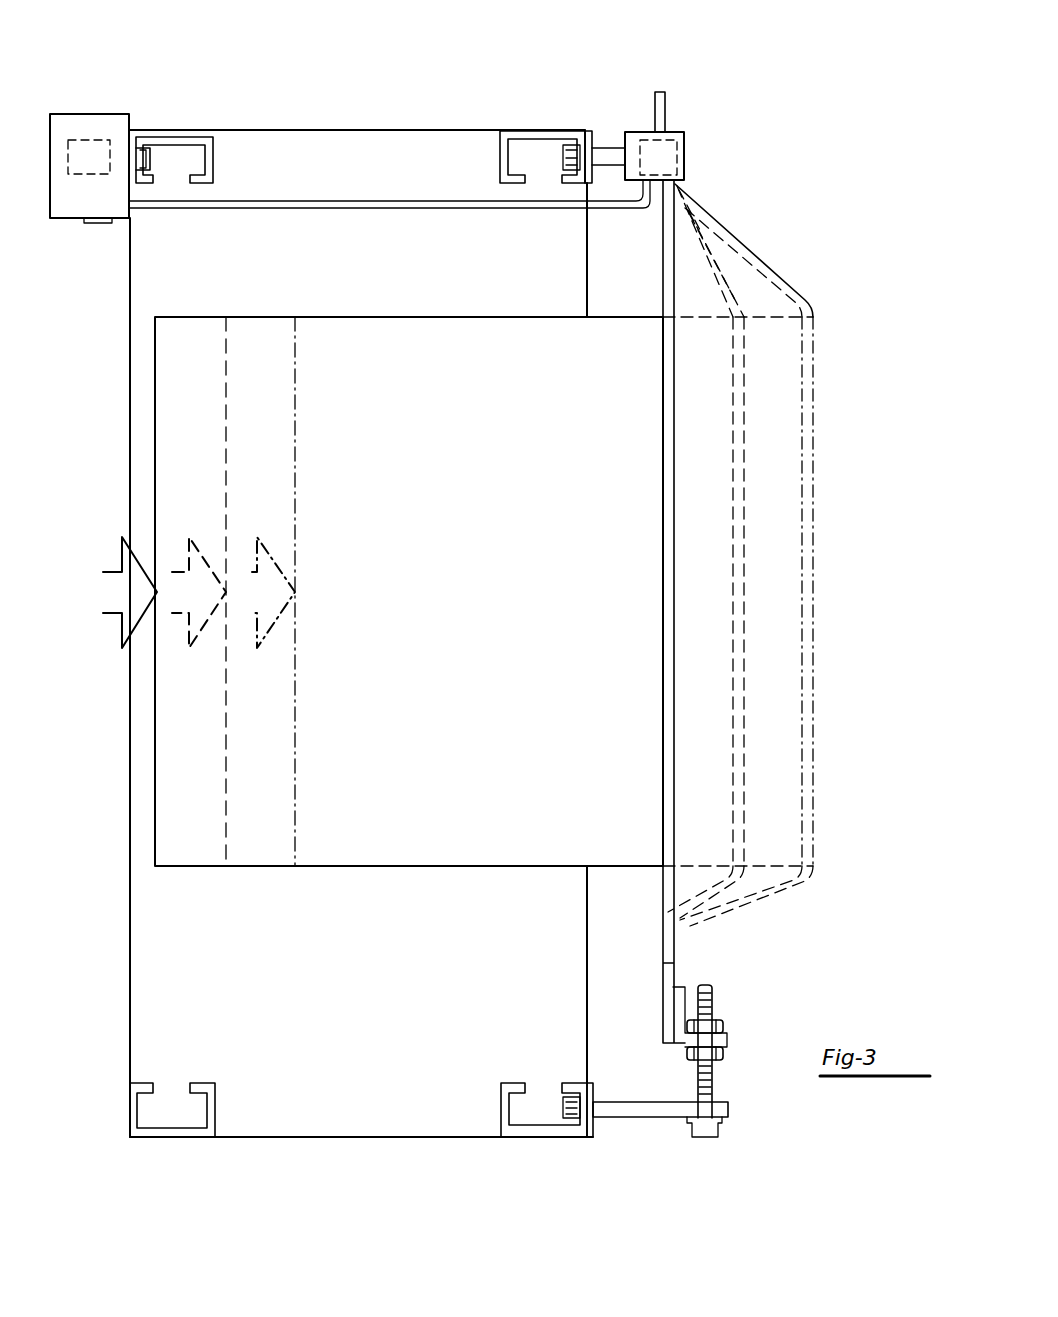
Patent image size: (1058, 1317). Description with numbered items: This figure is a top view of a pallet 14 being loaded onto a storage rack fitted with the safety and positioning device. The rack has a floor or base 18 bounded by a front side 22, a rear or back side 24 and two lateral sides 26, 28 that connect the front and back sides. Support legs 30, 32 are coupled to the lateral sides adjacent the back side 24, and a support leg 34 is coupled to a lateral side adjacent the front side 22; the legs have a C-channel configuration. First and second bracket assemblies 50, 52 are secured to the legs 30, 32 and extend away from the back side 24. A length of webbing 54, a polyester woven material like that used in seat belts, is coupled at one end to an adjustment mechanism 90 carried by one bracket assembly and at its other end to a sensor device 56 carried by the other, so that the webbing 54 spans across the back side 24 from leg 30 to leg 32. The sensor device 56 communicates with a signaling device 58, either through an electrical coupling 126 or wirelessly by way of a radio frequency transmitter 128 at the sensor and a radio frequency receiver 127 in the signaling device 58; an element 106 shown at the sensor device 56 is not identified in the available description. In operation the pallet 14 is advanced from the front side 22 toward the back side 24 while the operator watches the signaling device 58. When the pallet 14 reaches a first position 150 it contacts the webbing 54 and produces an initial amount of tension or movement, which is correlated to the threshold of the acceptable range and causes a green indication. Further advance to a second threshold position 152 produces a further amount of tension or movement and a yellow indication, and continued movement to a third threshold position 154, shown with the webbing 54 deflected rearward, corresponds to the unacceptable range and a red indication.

The pallet 14 is at (466, 866).
The base 18 is at (409, 1007).
The front side 22 is at (128, 320).
The back side 24 is at (589, 282).
The lateral side 26 is at (360, 1137).
The lateral side 28 is at (336, 130).
The support leg 30 is at (546, 1150).
The support leg 32 is at (555, 122).
The support leg 34 is at (168, 125).
The first bracket assembly 50 is at (632, 1132).
The second bracket assembly 52 is at (606, 133).
The length of webbing 54 is at (673, 277).
The sensor device 56 is at (697, 152).
The signaling device 58 is at (78, 106).
The adjustment mechanism 90 is at (713, 1077).
The pivot pin 106 is at (666, 110).
The electrical coupling 126 is at (287, 200).
The radio frequency receiver 127 is at (101, 138).
The radio frequency transmitter 128 is at (650, 137).
The first position 150 is at (663, 317).
The second threshold position 152 is at (738, 317).
The third threshold position 154 is at (803, 317).